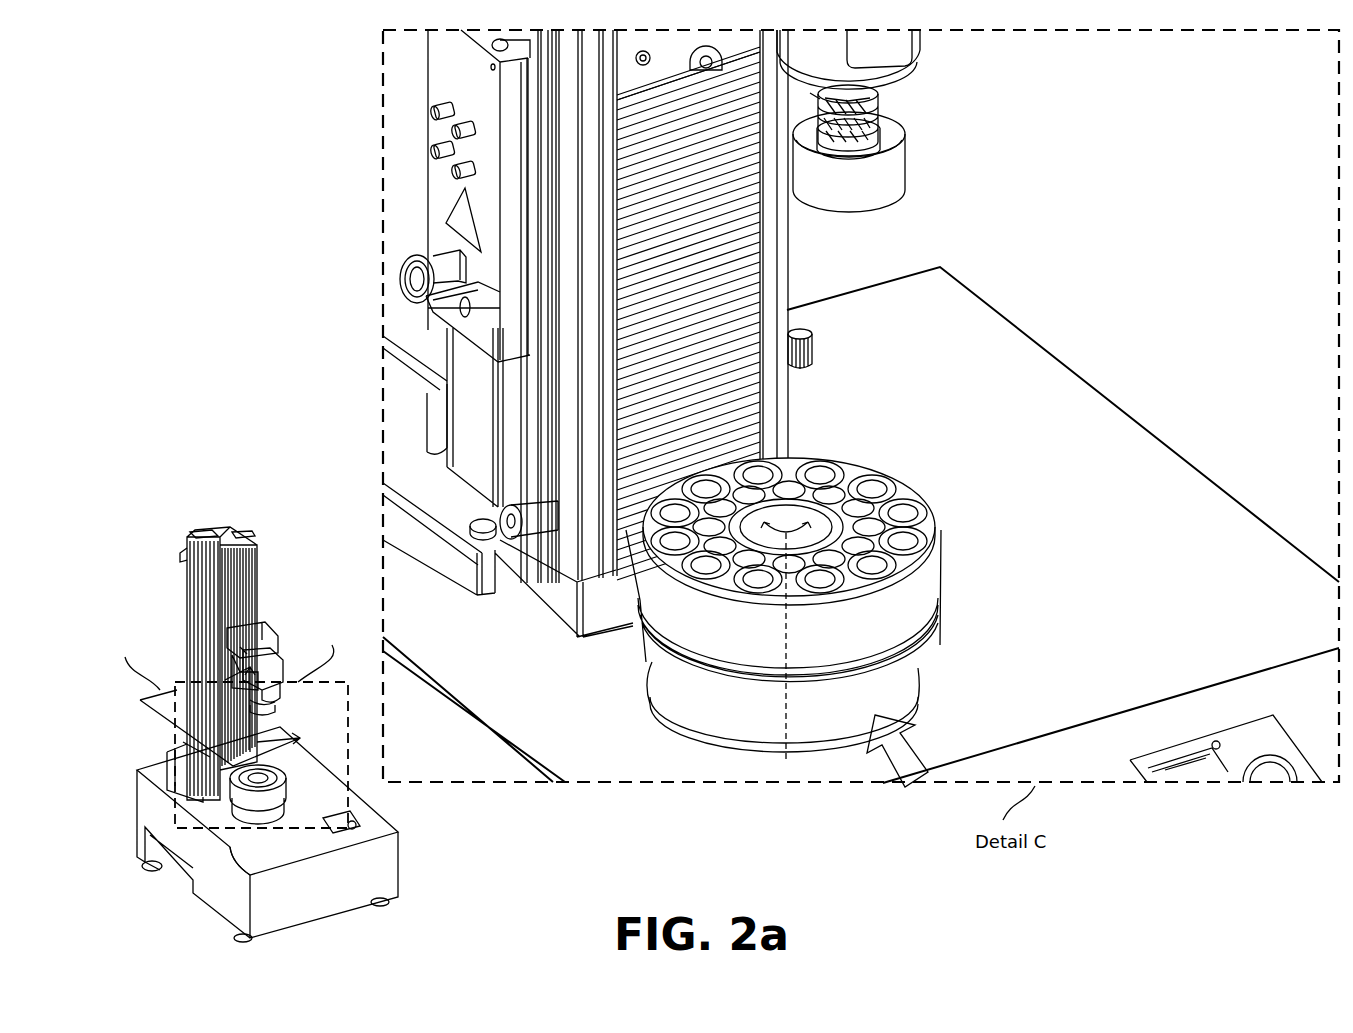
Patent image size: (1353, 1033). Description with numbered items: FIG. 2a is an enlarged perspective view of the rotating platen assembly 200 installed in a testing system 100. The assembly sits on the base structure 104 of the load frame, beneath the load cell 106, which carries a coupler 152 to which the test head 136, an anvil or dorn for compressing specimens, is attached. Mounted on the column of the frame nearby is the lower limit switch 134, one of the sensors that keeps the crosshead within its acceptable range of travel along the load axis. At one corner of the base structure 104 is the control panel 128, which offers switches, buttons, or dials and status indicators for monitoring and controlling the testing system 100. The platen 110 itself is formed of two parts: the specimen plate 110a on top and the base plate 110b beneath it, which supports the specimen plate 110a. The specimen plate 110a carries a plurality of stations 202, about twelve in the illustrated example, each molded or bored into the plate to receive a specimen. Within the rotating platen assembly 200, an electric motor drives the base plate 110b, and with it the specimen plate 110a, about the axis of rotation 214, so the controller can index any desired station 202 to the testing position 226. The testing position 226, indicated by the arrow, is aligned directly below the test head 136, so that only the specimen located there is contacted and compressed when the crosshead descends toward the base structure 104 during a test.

The testing system 100 is at (194, 515).
The base structure 104 is at (1138, 424).
The load cell 106 is at (918, 72).
The platen 110 is at (865, 572).
The specimen plate 110a is at (935, 547).
The base plate 110b is at (824, 693).
The control panel 128 is at (1272, 716).
The lower limit switch 134 is at (815, 347).
The test head 136 is at (905, 170).
The coupler 152 is at (878, 110).
The rotating platen assembly 200 is at (803, 559).
The stations 202 is at (877, 475).
The axis of rotation 214 is at (790, 648).
The testing position 226 is at (897, 751).